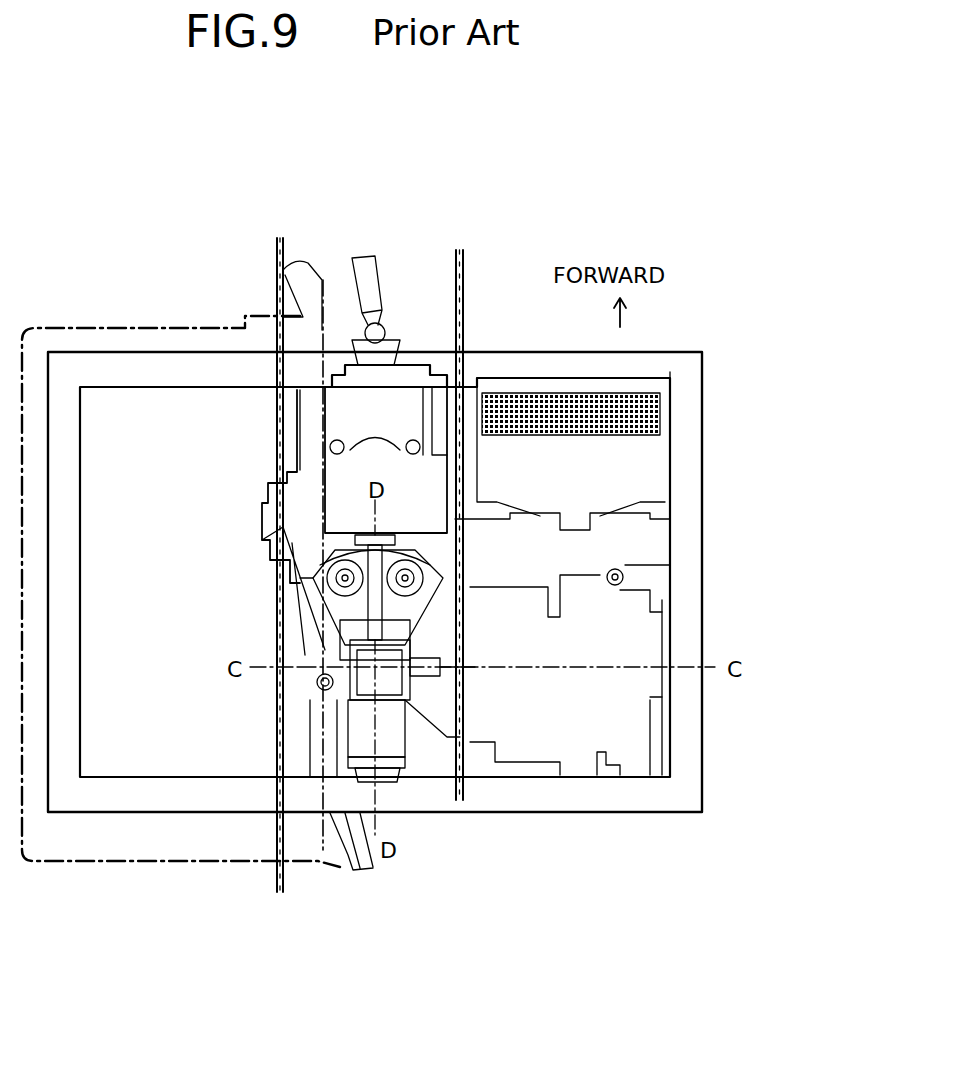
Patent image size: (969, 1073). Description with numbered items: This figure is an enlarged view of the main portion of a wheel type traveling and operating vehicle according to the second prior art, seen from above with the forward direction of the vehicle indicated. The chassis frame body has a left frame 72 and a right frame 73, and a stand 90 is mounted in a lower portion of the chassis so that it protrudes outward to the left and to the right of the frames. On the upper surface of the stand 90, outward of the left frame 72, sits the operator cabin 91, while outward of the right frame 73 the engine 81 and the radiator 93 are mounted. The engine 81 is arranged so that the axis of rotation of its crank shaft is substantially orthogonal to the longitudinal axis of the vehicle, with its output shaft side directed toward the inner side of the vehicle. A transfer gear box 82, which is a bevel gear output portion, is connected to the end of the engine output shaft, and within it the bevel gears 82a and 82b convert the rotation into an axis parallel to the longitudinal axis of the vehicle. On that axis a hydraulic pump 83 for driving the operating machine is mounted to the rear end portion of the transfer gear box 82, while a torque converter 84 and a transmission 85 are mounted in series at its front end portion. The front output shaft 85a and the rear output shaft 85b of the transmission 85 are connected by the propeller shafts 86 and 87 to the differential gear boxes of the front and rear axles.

The left frame 72 is at (290, 258).
The right frame 73 is at (470, 262).
The engine 81 is at (655, 612).
The transfer gear box 82 is at (318, 668).
The bevel gear 82a is at (378, 708).
The bevel gear 82b is at (345, 650).
The hydraulic pump 83 is at (440, 742).
The torque converter 84 is at (335, 560).
The transmission 85 is at (290, 432).
The front output shaft 85a is at (390, 340).
The rear output shaft 85b is at (300, 577).
The propeller shaft 86 is at (386, 266).
The propeller shaft 87 is at (362, 872).
The stand 90 is at (585, 813).
The operator cabin 91 is at (160, 325).
The radiator 93 is at (662, 505).